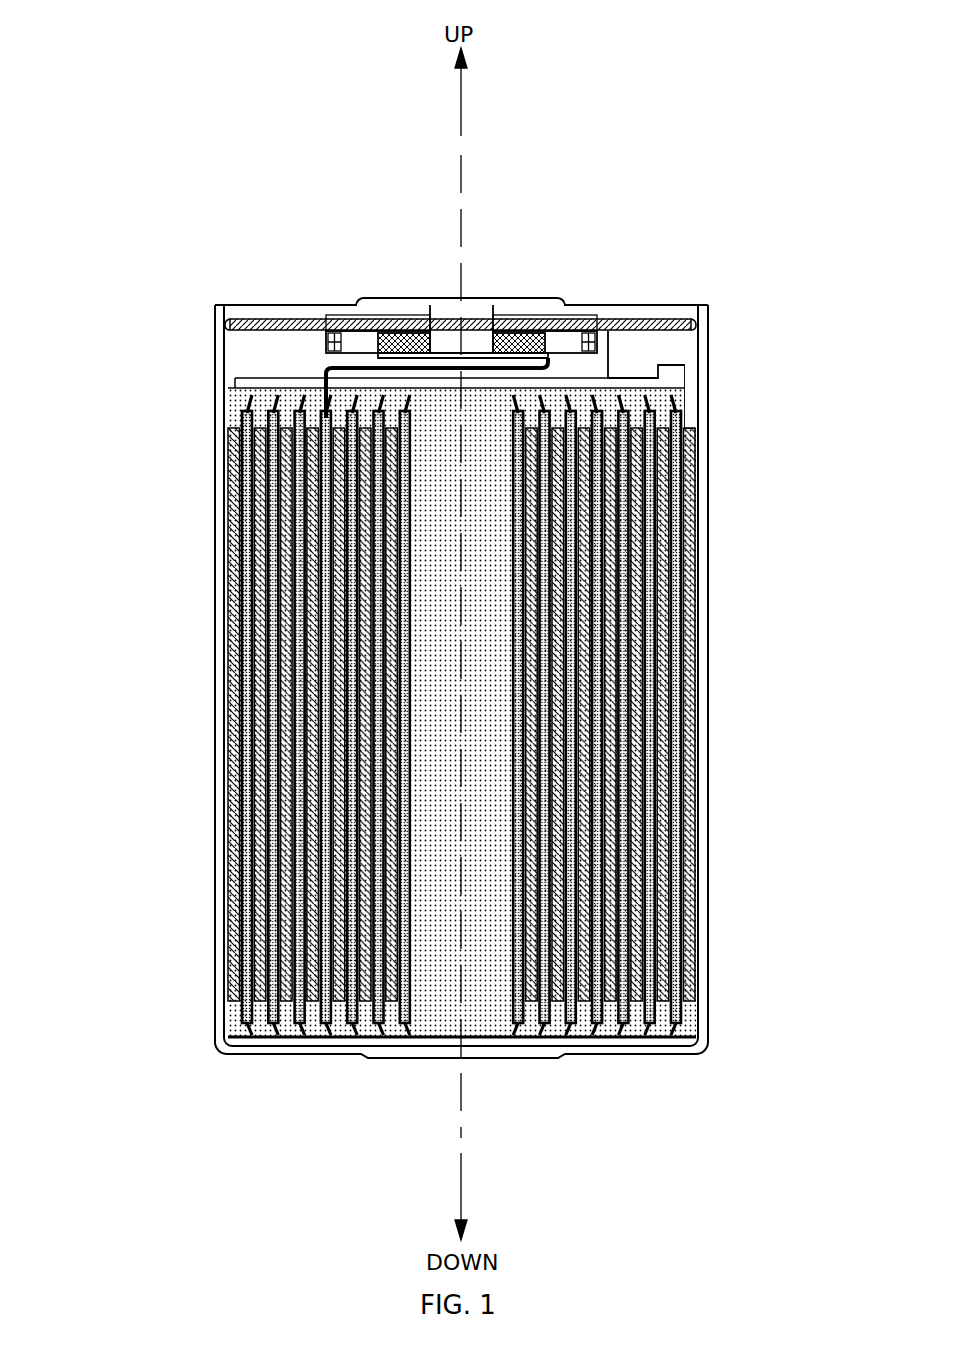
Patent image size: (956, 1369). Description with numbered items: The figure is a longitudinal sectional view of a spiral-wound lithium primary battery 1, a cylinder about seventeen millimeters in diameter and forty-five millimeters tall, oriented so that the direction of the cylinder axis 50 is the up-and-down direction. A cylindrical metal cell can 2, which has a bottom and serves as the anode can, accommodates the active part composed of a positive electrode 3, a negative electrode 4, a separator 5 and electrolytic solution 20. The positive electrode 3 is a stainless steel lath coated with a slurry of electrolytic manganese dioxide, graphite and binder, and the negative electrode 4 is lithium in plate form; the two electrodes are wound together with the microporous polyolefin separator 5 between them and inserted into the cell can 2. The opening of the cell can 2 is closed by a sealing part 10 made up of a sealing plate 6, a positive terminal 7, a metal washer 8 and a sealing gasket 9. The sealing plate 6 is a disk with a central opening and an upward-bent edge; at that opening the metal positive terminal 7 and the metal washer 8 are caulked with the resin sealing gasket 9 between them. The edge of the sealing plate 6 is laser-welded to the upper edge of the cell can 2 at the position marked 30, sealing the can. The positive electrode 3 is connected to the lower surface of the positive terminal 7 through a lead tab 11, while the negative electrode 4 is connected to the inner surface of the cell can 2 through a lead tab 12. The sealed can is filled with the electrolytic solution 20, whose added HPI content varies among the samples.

The lithium primary battery 1 is at (207, 128).
The cell can 2 is at (213, 600).
The positive electrode 3 is at (231, 781).
The negative electrode 4 is at (225, 921).
The separator 5 is at (234, 1019).
The sealing plate 6 is at (276, 296).
The positive terminal 7 is at (382, 296).
The metal washer 8 is at (433, 336).
The sealing gasket 9 is at (335, 296).
The sealing part 10 is at (420, 198).
The lead tab 11 is at (317, 372).
The lead tab 12 is at (680, 380).
The electrolytic solution 20 is at (420, 697).
The laser-welded position 30 is at (208, 297).
The cylinder axis 50 is at (456, 170).